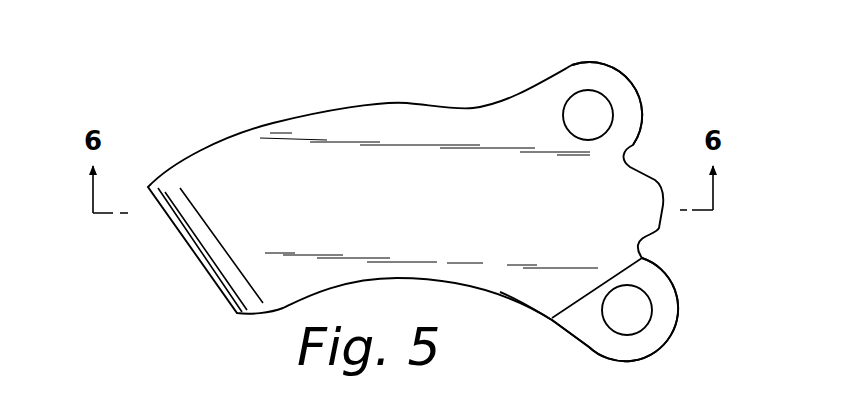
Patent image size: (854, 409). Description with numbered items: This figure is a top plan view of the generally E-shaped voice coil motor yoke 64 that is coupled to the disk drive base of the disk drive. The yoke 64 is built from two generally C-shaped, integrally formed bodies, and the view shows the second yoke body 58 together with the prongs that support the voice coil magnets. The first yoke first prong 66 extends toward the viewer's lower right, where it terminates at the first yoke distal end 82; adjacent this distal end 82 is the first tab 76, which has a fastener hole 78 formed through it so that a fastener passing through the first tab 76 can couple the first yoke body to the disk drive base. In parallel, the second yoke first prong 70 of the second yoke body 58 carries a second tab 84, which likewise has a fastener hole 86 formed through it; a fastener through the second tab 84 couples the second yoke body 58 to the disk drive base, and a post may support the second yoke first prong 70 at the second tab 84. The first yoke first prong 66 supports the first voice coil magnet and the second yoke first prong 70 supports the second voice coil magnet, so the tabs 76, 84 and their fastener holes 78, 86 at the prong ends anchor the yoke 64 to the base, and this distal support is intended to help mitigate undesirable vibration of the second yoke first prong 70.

The second yoke body 58 is at (190, 242).
The voice coil motor yoke 64 is at (240, 113).
The first yoke first prong 66 is at (567, 322).
The second yoke first prong 70 is at (397, 110).
The first tab 76 is at (667, 337).
The fastener hole 78 is at (657, 300).
The first yoke distal end 82 is at (583, 332).
The second tab 84 is at (582, 65).
The fastener hole 86 is at (615, 93).